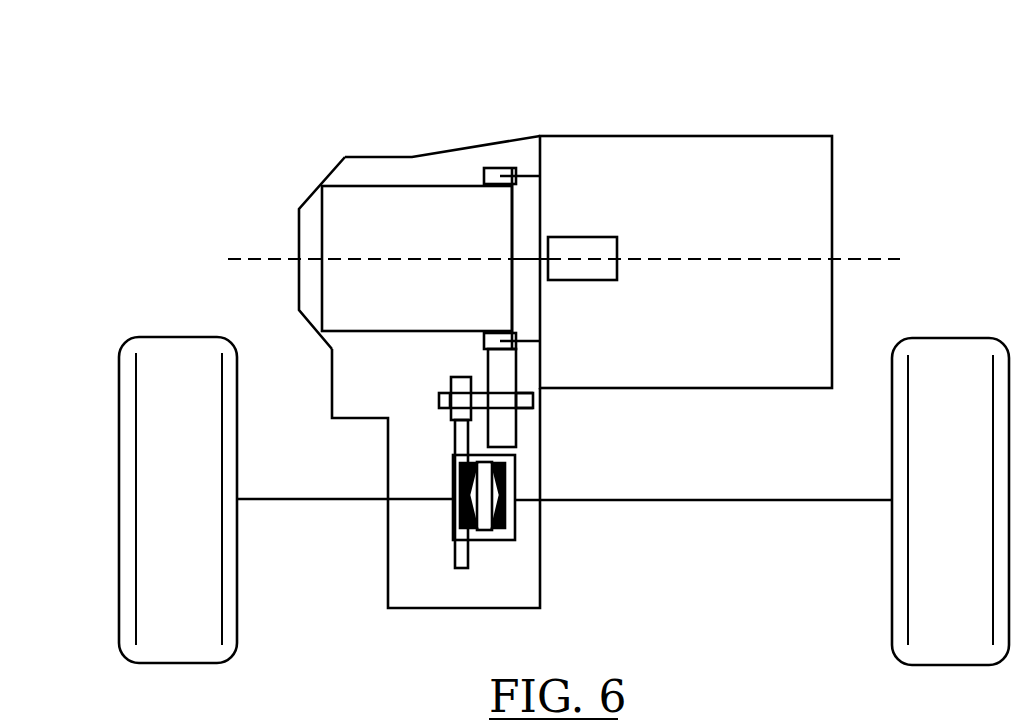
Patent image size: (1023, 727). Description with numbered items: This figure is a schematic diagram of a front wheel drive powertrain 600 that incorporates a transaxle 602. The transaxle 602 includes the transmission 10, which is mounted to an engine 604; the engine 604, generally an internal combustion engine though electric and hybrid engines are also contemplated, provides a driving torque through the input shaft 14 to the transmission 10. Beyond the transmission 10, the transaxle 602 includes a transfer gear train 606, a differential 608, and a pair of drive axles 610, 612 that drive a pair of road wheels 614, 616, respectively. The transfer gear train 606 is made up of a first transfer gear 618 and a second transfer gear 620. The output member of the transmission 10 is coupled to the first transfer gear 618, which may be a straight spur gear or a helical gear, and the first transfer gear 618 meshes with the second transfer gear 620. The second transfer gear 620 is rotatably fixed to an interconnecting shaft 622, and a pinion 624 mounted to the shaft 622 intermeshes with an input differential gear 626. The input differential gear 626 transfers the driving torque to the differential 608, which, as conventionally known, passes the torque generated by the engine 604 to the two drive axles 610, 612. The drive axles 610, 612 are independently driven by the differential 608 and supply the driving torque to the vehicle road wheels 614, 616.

The front wheel drive powertrain 600 is at (589, 218).
The transaxle 602 is at (416, 150).
The engine 604 is at (650, 136).
The transmission 10 is at (428, 251).
The input shaft 14 is at (526, 257).
The first transfer gear 618 is at (489, 343).
The second transfer gear 620 is at (516, 440).
The interconnecting shaft 622 is at (439, 400).
The pinion 624 is at (451, 385).
The input differential gear 626 is at (455, 560).
The transfer gear train 606 is at (525, 430).
The differential 608 is at (511, 562).
The drive axle 610 is at (270, 499).
The drive axle 612 is at (705, 500).
The road wheel 614 is at (166, 337).
The road wheel 616 is at (936, 338).